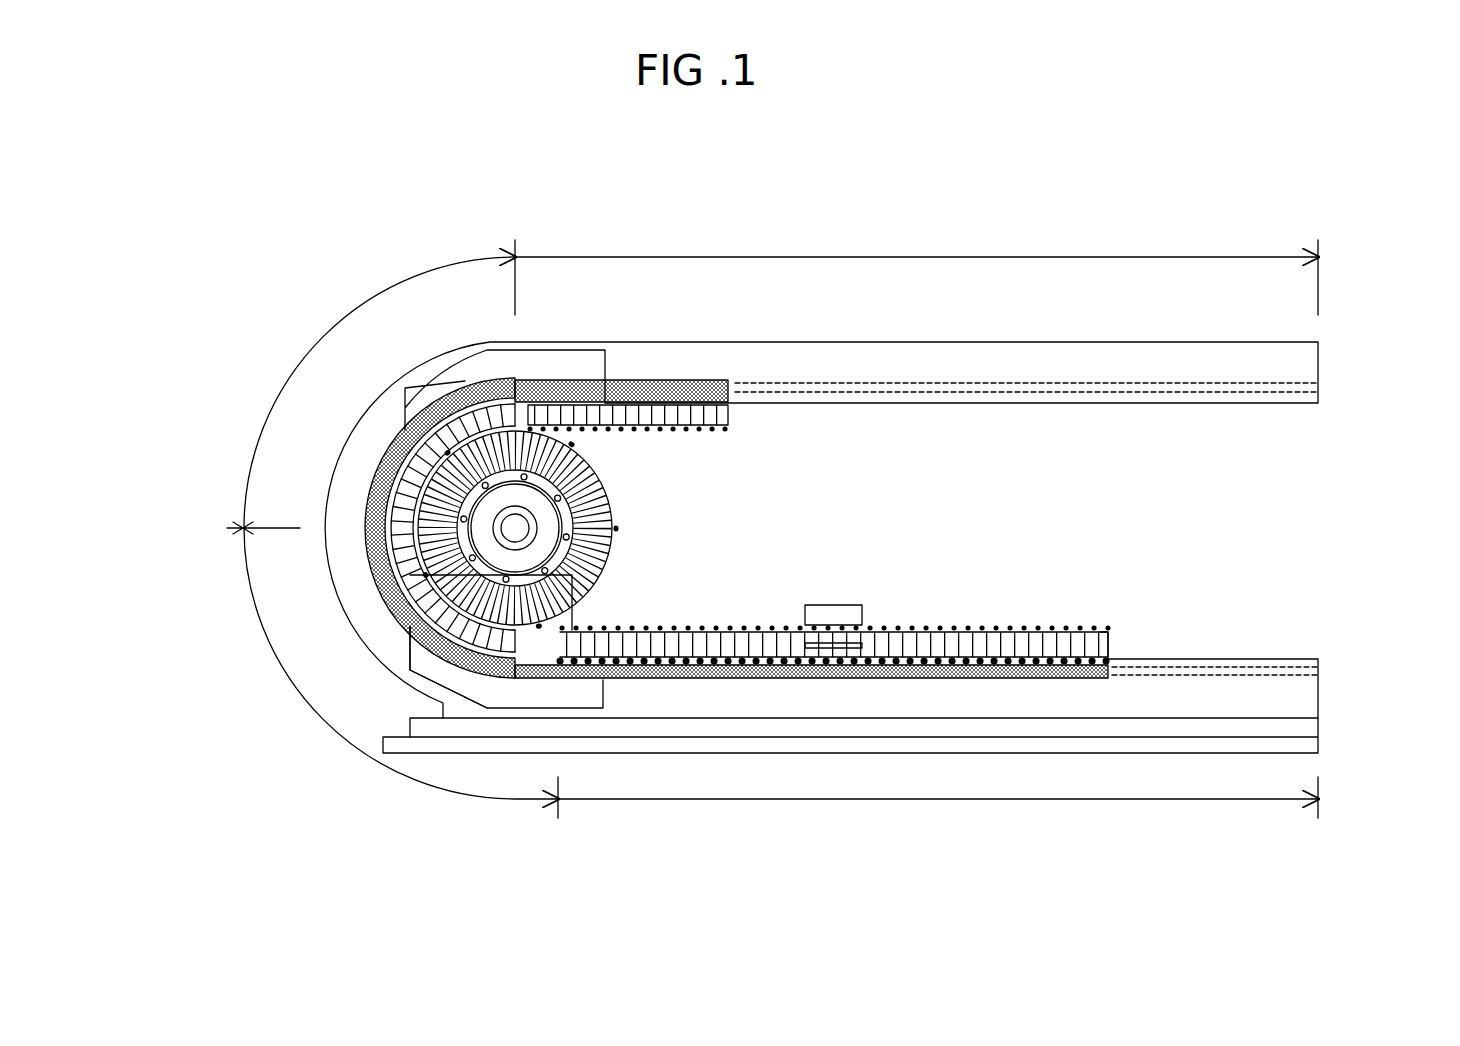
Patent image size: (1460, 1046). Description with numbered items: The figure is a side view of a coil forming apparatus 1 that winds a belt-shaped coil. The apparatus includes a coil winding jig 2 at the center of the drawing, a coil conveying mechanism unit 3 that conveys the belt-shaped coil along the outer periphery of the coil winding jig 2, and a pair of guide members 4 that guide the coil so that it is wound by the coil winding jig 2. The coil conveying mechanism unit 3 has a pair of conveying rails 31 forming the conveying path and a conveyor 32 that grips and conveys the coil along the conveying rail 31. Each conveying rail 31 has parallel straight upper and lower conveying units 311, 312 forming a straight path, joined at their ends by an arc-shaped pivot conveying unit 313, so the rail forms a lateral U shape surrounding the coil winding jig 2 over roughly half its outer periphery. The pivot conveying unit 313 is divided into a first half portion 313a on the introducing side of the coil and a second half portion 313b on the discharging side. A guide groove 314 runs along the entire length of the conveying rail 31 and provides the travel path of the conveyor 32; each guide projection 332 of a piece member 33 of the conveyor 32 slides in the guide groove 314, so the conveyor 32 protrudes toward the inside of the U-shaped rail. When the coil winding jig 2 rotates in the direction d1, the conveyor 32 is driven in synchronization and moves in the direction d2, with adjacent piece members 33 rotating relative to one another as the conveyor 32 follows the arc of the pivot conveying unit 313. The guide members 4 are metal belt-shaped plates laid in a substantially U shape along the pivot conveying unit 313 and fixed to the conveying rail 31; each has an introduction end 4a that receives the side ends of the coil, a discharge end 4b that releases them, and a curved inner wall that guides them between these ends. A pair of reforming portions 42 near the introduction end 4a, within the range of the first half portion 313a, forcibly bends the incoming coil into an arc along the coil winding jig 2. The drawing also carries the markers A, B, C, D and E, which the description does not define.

The coil forming apparatus 1 is at (964, 200).
The coil winding jig 2 is at (648, 540).
The coil conveying mechanism unit 3 is at (1252, 426).
The conveying rail 31 is at (1318, 690).
The straight conveying unit 311 is at (918, 799).
The straight conveying unit 312 is at (1100, 257).
The pivot conveying unit 313 is at (148, 472).
The first half portion 313a is at (250, 603).
The second half portion 313b is at (248, 455).
The guide groove 314 is at (1268, 659).
The conveyor 32 is at (1108, 620).
The piece member 33 is at (1020, 626).
The guide projection 332 is at (1110, 668).
The guide member 4 is at (738, 532).
The introduction end 4a is at (565, 640).
The discharge end 4b is at (550, 383).
The reforming portion 42 is at (415, 662).
The direction A is at (1380, 527).
The direction B is at (1072, 546).
The region C is at (850, 604).
The region D is at (585, 610).
The region E is at (384, 505).
The direction d1 is at (626, 459).
The direction d2 is at (740, 604).